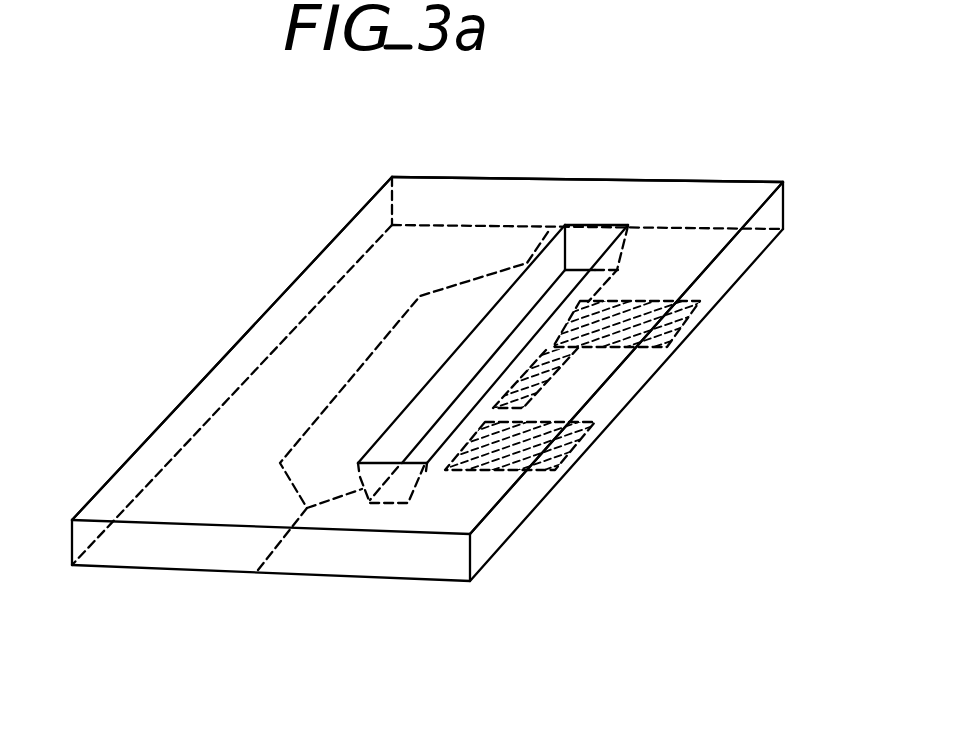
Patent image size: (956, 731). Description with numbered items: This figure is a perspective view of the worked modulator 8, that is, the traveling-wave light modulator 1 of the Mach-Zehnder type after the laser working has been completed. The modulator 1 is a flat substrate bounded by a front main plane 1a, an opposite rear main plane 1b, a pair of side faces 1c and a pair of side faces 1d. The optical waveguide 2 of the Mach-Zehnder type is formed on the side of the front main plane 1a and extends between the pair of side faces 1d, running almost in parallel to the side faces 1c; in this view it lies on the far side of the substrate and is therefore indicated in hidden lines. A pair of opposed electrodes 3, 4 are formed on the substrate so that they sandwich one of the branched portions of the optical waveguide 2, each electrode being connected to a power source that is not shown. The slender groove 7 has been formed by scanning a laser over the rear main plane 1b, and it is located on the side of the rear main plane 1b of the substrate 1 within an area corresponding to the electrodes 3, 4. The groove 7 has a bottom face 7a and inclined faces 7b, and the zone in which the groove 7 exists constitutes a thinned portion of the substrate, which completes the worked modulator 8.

The traveling-wave light modulator 1 is at (451, 320).
The front main plane 1a is at (537, 503).
The rear main plane 1b is at (197, 390).
The side faces 1c is at (627, 383).
The side faces 1d is at (205, 548).
The optical waveguide 2 is at (290, 552).
The electrode 3 is at (562, 447).
The electrode 4 is at (667, 310).
The groove 7 is at (568, 220).
The bottom face 7a is at (495, 362).
The inclined faces 7b is at (432, 397).
The worked modulator 8 is at (704, 142).